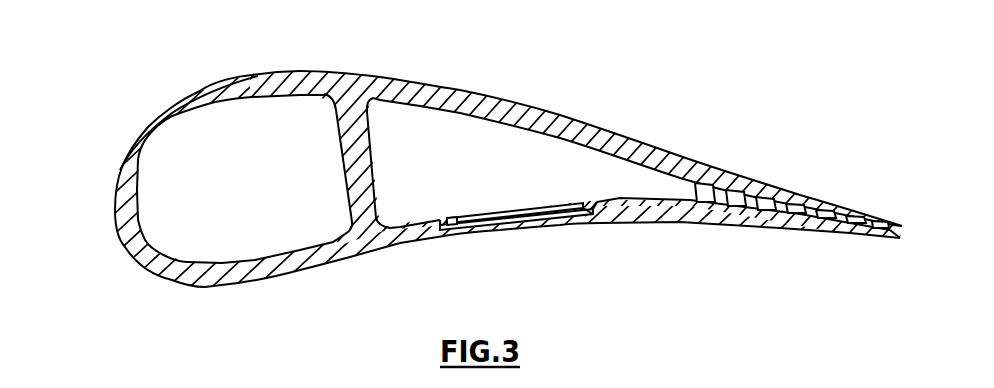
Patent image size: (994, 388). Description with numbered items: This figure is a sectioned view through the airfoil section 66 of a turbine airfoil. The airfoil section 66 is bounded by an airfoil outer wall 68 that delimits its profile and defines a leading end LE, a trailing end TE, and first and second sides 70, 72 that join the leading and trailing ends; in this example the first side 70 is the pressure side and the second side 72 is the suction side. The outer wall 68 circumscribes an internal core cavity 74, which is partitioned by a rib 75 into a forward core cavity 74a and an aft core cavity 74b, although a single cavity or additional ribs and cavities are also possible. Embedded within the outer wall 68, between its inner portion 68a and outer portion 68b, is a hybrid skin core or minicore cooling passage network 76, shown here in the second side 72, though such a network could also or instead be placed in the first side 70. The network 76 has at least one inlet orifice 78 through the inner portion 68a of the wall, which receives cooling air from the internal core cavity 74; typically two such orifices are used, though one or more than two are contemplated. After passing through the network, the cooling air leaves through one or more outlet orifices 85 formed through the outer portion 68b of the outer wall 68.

The airfoil section 66 is at (237, 292).
The airfoil outer wall 68 is at (277, 74).
The inner portion of the airfoil outer wall 68a is at (490, 216).
The outer portion of the airfoil outer wall 68b is at (497, 236).
The first side 70 is at (395, 244).
The second side 72 is at (372, 76).
The internal core cavity 74 is at (590, 186).
The forward core cavity 74a is at (248, 194).
The aft core cavity 74b is at (462, 176).
The rib 75 is at (338, 137).
The hybrid skin core cooling passage network 76 is at (543, 231).
The inlet orifice 78 is at (452, 215).
The outlet orifice 85 is at (588, 224).
The leading end LE is at (110, 234).
The trailing end TE is at (898, 254).